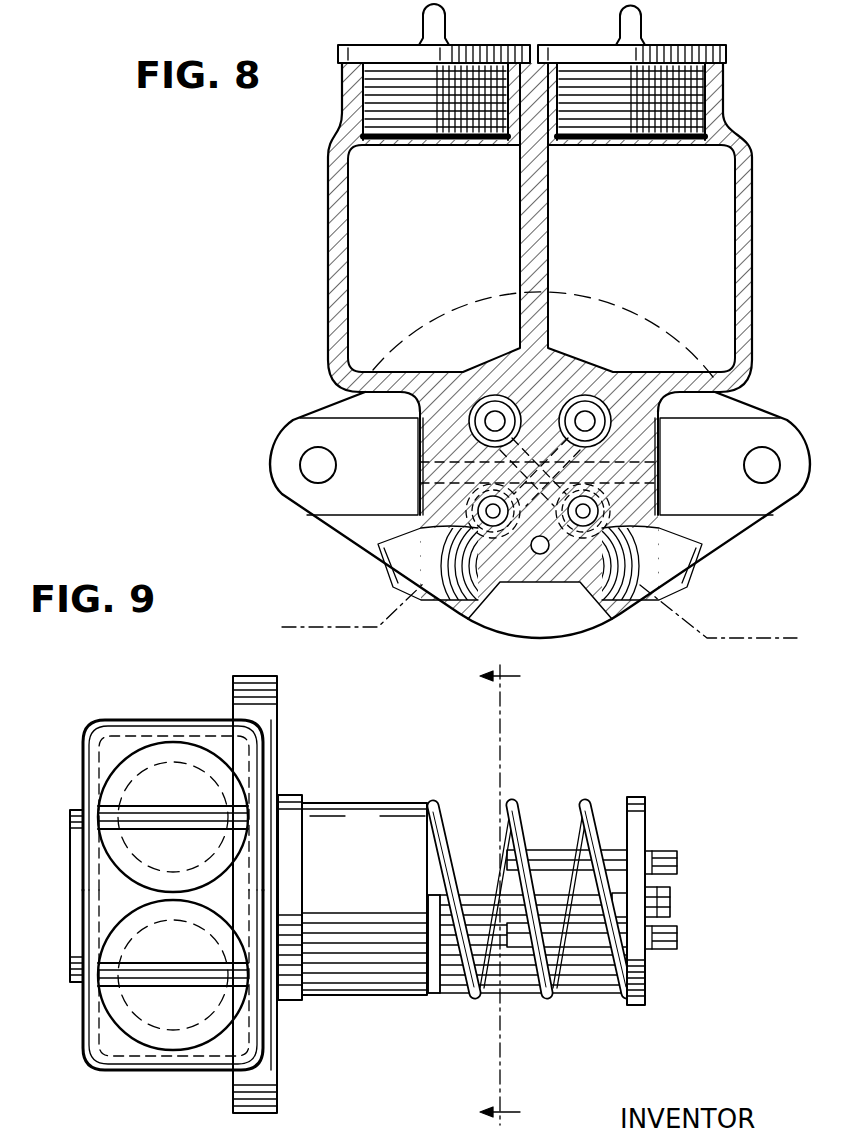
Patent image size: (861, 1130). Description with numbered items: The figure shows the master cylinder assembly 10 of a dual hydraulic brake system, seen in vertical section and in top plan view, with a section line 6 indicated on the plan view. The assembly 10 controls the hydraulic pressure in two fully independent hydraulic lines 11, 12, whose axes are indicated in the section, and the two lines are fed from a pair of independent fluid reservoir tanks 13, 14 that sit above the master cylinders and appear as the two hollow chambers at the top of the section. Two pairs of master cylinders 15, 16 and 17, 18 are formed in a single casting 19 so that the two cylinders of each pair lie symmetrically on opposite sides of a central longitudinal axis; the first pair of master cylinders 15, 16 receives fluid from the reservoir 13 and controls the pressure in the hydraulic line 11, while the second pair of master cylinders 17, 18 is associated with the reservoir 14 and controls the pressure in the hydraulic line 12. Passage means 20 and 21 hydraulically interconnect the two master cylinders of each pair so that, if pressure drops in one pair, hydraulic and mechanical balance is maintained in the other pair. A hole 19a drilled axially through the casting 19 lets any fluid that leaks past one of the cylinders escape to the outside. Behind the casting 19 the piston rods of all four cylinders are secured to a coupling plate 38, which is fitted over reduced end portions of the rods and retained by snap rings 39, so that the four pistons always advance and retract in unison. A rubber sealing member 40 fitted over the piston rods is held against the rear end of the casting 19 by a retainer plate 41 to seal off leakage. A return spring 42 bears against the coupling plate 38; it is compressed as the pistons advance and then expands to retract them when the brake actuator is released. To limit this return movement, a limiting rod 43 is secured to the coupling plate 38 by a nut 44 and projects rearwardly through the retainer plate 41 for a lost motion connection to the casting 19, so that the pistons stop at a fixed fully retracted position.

In FIG. 8, the master cylinder assembly 10 is at (702, 564).
In FIG. 8, the hydraulic line 11 is at (322, 627).
In FIG. 8, the hydraulic line 12 is at (797, 638).
In FIG. 8, the fluid reservoir tank 13 is at (752, 230).
In FIG. 9, the fluid reservoir tank 13 is at (140, 1072).
In FIG. 8, the fluid reservoir tank 14 is at (328, 228).
In FIG. 9, the fluid reservoir tank 14 is at (130, 720).
In FIG. 8, the master cylinder 15 is at (590, 396).
In FIG. 8, the master cylinder 16 is at (420, 486).
In FIG. 8, the master cylinder 17 is at (492, 398).
In FIG. 8, the master cylinder 18 is at (640, 490).
In FIG. 8, the casting 19 is at (658, 440).
In FIG. 9, the casting 19 is at (350, 803).
In FIG. 8, the hole 19a is at (540, 556).
In FIG. 8, the passage means 20 is at (640, 463).
In FIG. 8, the passage means 21 is at (420, 460).
In FIG. 9, the coupling plate 38 is at (645, 815).
In FIG. 9, the snap ring 39 is at (660, 855).
In FIG. 9, the rubber sealing member 40 is at (500, 985).
In FIG. 9, the retainer plate 41 is at (510, 985).
In FIG. 9, the return spring 42 is at (512, 806).
In FIG. 9, the limiting rod 43 is at (548, 895).
In FIG. 9, the nut 44 is at (667, 890).
In FIG. 8, the section line 6- 6 is at (489, 890).
In FIG. 9, the section line 6- 6 is at (489, 1115).